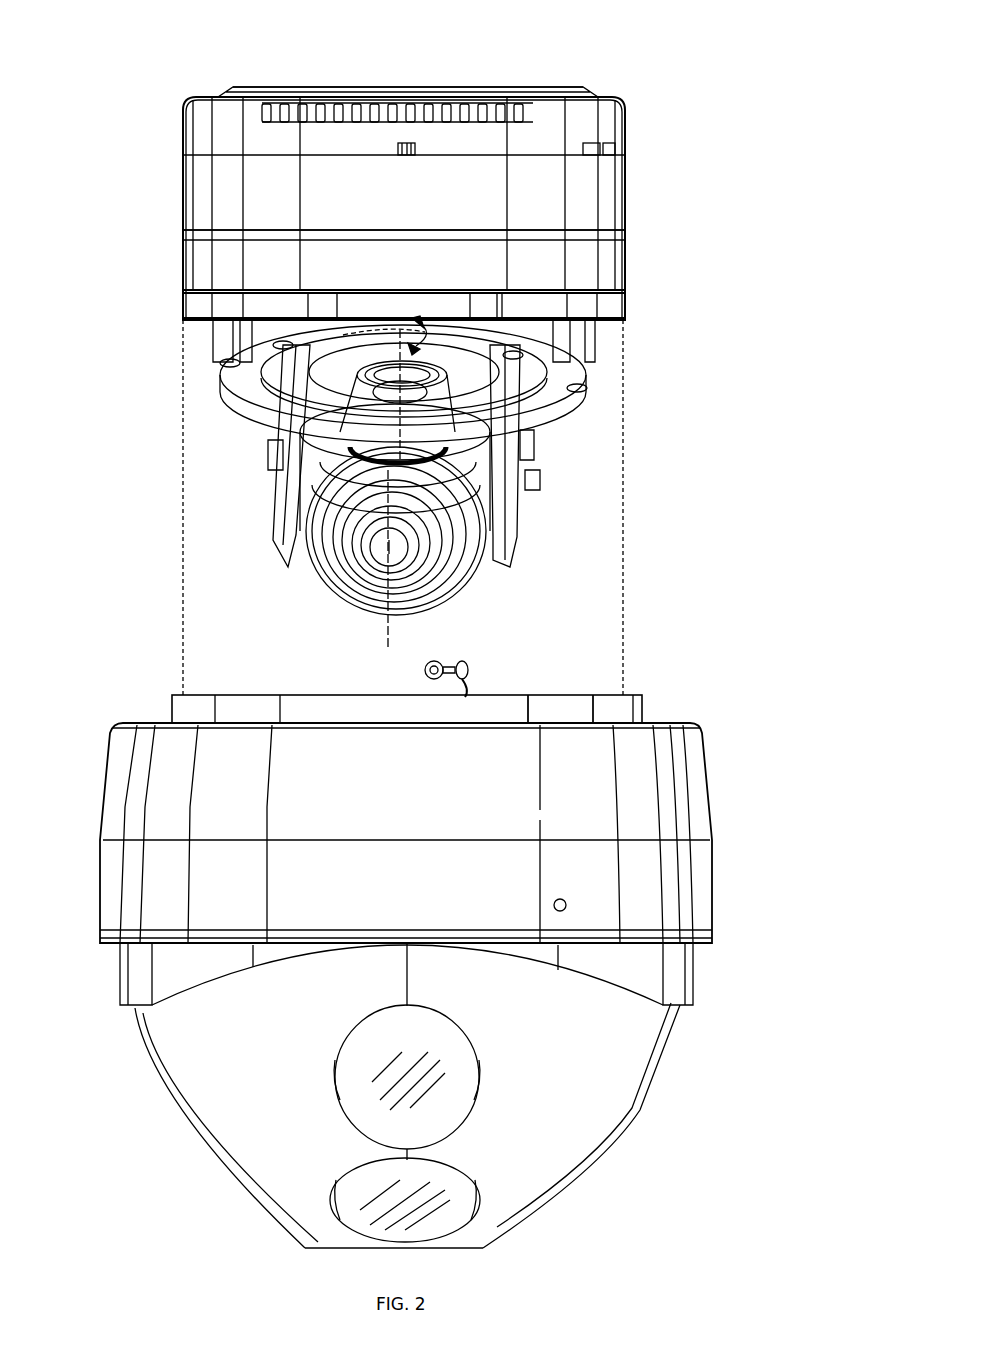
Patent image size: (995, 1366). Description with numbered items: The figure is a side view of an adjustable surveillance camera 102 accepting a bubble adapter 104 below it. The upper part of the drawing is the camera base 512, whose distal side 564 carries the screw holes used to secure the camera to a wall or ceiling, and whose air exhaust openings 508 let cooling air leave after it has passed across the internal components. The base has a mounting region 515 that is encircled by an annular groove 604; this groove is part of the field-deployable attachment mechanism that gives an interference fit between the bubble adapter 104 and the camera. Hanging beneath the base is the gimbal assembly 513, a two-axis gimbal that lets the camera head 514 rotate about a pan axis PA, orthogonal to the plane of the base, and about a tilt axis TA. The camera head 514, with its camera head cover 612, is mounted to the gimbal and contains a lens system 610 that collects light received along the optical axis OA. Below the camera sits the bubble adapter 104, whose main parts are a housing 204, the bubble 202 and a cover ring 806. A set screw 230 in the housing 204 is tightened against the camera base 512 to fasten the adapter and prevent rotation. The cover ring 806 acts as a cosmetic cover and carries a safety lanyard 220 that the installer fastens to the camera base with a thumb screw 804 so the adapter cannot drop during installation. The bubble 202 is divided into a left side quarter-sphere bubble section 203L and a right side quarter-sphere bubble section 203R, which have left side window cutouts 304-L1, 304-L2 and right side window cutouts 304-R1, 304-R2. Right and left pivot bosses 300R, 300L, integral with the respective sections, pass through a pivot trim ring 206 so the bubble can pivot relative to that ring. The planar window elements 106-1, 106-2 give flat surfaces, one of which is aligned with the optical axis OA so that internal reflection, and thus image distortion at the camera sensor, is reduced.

The adjustable surveillance camera 102 is at (114, 44).
The bubble adapter 104 is at (75, 626).
The air exhaust openings 508 is at (338, 108).
The distal side of the camera base 564 is at (508, 95).
The mounting region 515 is at (158, 115).
The camera base 512 is at (660, 75).
The annular groove 604 is at (330, 225).
The tilt axis TA is at (372, 335).
The pan axis PA is at (393, 418).
The optical axis OA is at (382, 634).
The gimbal assembly 513 is at (462, 385).
The camera head cover 612 is at (500, 470).
The camera head 514 is at (355, 458).
The lens system 610 is at (380, 548).
The thumb screw 804 is at (432, 660).
The safety lanyard 220 is at (478, 665).
The cover ring 806 is at (548, 712).
The housing 204 is at (638, 778).
The set screw 230 is at (555, 898).
The pivot trim ring 206 is at (618, 950).
The right pivot boss 300R is at (118, 975).
The left pivot boss 300L is at (695, 985).
The bubble 202 is at (128, 1083).
The right side quarter-sphere bubble section 203R is at (208, 1093).
The left side quarter-sphere bubble section 203L is at (595, 1095).
The planar window element 106-1 is at (425, 1020).
The planar window element 106-2 is at (430, 1150).
The right side window cutout 304-R1 is at (333, 1057).
The left side window cutout 304-L1 is at (482, 1065).
The right side window cutout 304-R2 is at (345, 1178).
The left side window cutout 304-L2 is at (480, 1188).